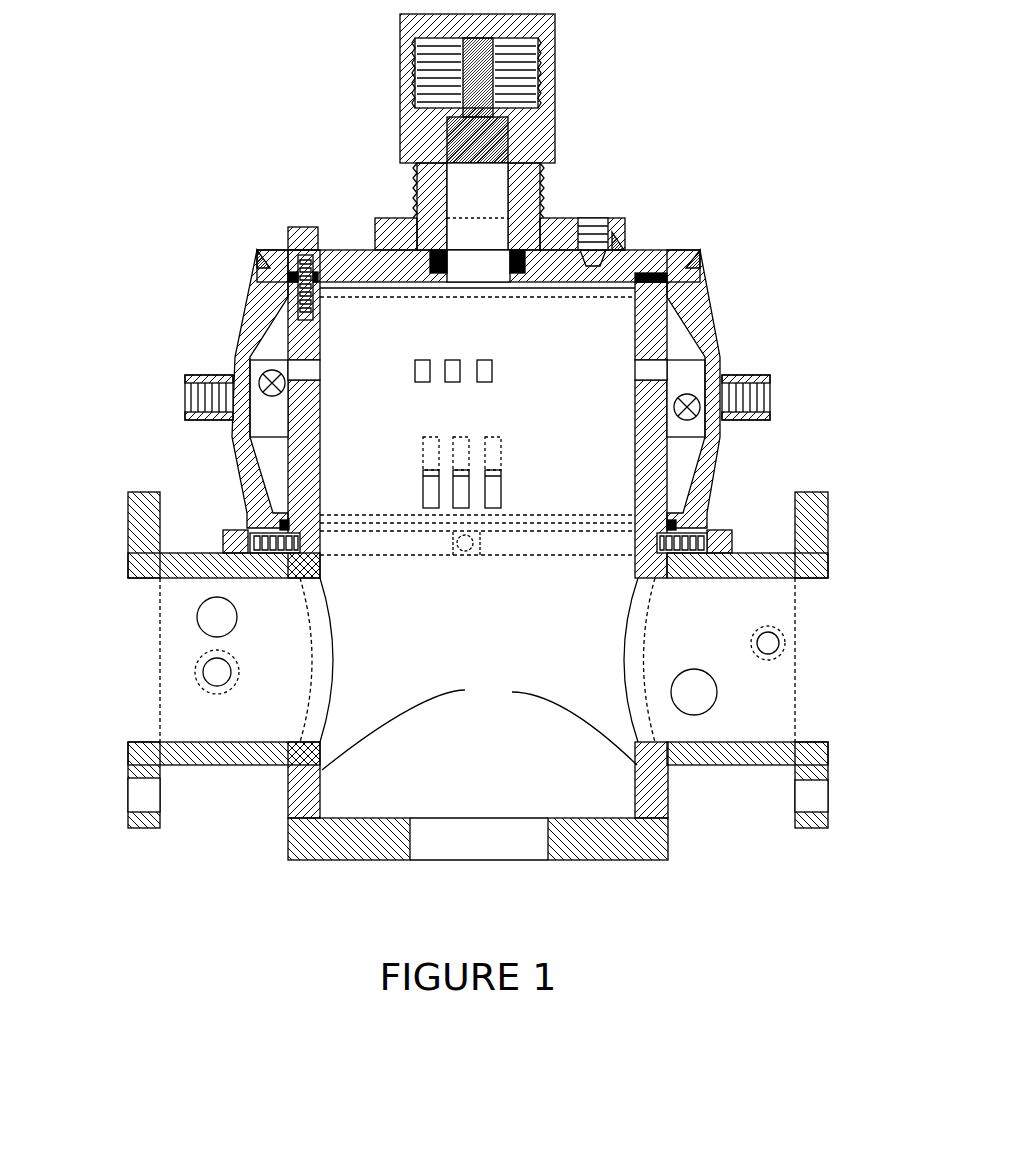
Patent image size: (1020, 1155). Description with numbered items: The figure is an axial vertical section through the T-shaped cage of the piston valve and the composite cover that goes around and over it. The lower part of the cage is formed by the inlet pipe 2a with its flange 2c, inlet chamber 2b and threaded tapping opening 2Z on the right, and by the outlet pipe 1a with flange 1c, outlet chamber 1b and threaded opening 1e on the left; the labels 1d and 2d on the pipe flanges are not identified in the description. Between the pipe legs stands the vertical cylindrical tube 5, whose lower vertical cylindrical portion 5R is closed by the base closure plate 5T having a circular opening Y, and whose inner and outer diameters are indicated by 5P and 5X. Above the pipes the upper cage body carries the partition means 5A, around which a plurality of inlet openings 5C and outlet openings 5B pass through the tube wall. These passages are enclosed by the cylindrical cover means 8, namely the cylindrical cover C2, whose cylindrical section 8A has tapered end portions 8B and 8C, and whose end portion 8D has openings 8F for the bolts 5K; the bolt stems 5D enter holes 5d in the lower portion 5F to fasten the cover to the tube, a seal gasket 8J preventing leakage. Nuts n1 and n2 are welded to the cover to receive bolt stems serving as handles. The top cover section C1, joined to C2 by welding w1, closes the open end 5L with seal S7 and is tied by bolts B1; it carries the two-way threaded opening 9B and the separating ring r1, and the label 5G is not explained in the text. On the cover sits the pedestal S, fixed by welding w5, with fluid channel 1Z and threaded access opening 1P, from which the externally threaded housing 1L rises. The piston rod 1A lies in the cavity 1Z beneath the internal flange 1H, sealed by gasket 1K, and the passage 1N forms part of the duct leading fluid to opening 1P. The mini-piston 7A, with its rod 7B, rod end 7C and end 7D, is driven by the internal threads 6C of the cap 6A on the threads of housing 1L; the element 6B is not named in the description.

The piston rod 1A is at (523, 147).
The internal flange 1H is at (418, 165).
The seal gasket 1K is at (418, 288).
The externally threaded cylindrical housing 1L is at (415, 205).
The tubular passage 1N is at (540, 233).
The threaded access opening 1P is at (597, 228).
The cylindrical cavity 1Z is at (467, 245).
The outlet pipe 1a is at (165, 586).
The outlet chamber 1b is at (217, 617).
The flange 1c is at (132, 520).
The left lower flange 1d is at (135, 793).
The threaded opening 1e is at (213, 680).
The threaded tapping opening 2Z is at (778, 640).
The inlet pipe 2a is at (713, 742).
The inlet chamber 2b is at (694, 692).
The flange 2c is at (822, 830).
The right lower flange 2d is at (822, 795).
The vertical cylindrical tube 5 is at (653, 337).
The partition means 5A is at (320, 452).
The outlet openings 5B is at (320, 480).
The inlet openings 5C is at (305, 372).
The bolt stems 5D is at (330, 556).
The lower portion 5F is at (662, 520).
The seal ring 5G is at (280, 262).
The bolts 5K is at (237, 528).
The open end 5L is at (668, 305).
The inner diameter 5P is at (320, 412).
The vertical cylindrical portion 5R is at (479, 725).
The base closure plate 5T is at (380, 832).
The outer diameter 5X is at (300, 345).
The holes 5d is at (655, 535).
The cap 6A is at (440, 43).
The lower thread 6B is at (440, 112).
The internal threads 6C is at (470, 73).
The mini-piston 7A is at (548, 118).
The rod 7B is at (522, 108).
The rod end 7C is at (548, 17).
The end 7D is at (470, 168).
The cylindrical cover means 8 is at (712, 455).
The cylindrical section 8A is at (243, 350).
The tapered end portion 8B is at (232, 450).
The tapered end portion 8C is at (250, 312).
The end portion 8D is at (237, 527).
The openings 8F is at (283, 556).
The seal gasket 8J is at (595, 540).
The threaded opening 9B is at (302, 226).
The bolts B1 is at (303, 226).
The top cover section C1 is at (550, 285).
The cylindrical cover C2 is at (240, 335).
The pedestal S is at (400, 215).
The seal S7 is at (652, 258).
The circular opening Y is at (530, 850).
The nut n1 is at (180, 380).
The nut n2 is at (770, 385).
The separating ring r1 is at (405, 300).
The welding w1 is at (266, 256).
The welding w5 is at (623, 243).